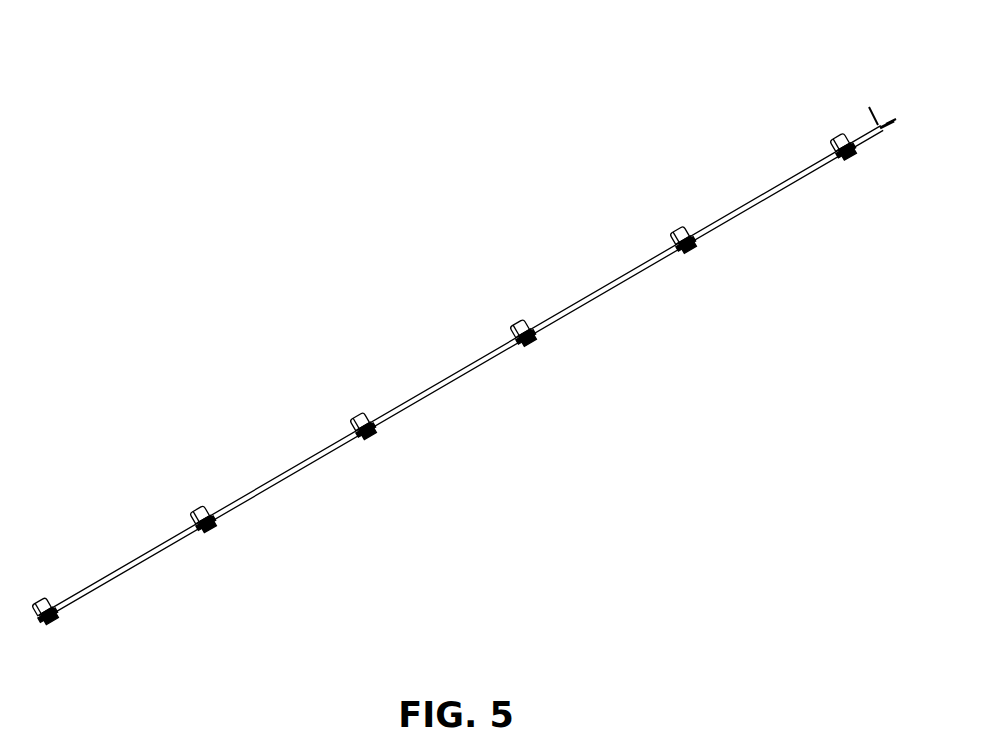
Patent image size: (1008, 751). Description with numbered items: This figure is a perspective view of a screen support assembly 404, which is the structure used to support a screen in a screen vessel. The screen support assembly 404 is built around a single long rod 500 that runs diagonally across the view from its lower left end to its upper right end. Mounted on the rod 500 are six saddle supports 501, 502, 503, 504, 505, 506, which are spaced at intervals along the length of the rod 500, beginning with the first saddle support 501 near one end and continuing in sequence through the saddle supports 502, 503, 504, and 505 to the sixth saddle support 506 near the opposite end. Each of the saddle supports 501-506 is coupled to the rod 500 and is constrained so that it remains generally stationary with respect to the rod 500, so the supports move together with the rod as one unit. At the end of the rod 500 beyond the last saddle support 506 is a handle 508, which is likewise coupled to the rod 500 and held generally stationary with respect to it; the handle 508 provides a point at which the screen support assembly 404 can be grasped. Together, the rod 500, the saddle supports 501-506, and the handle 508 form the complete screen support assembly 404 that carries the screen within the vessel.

The screen support assembly 404 is at (295, 180).
The rod 500 is at (305, 462).
The saddle support 501 is at (42, 596).
The saddle support 502 is at (200, 503).
The saddle support 503 is at (360, 410).
The saddle support 504 is at (520, 318).
The saddle support 505 is at (708, 152).
The saddle support 506 is at (868, 62).
The handle 508 is at (886, 140).